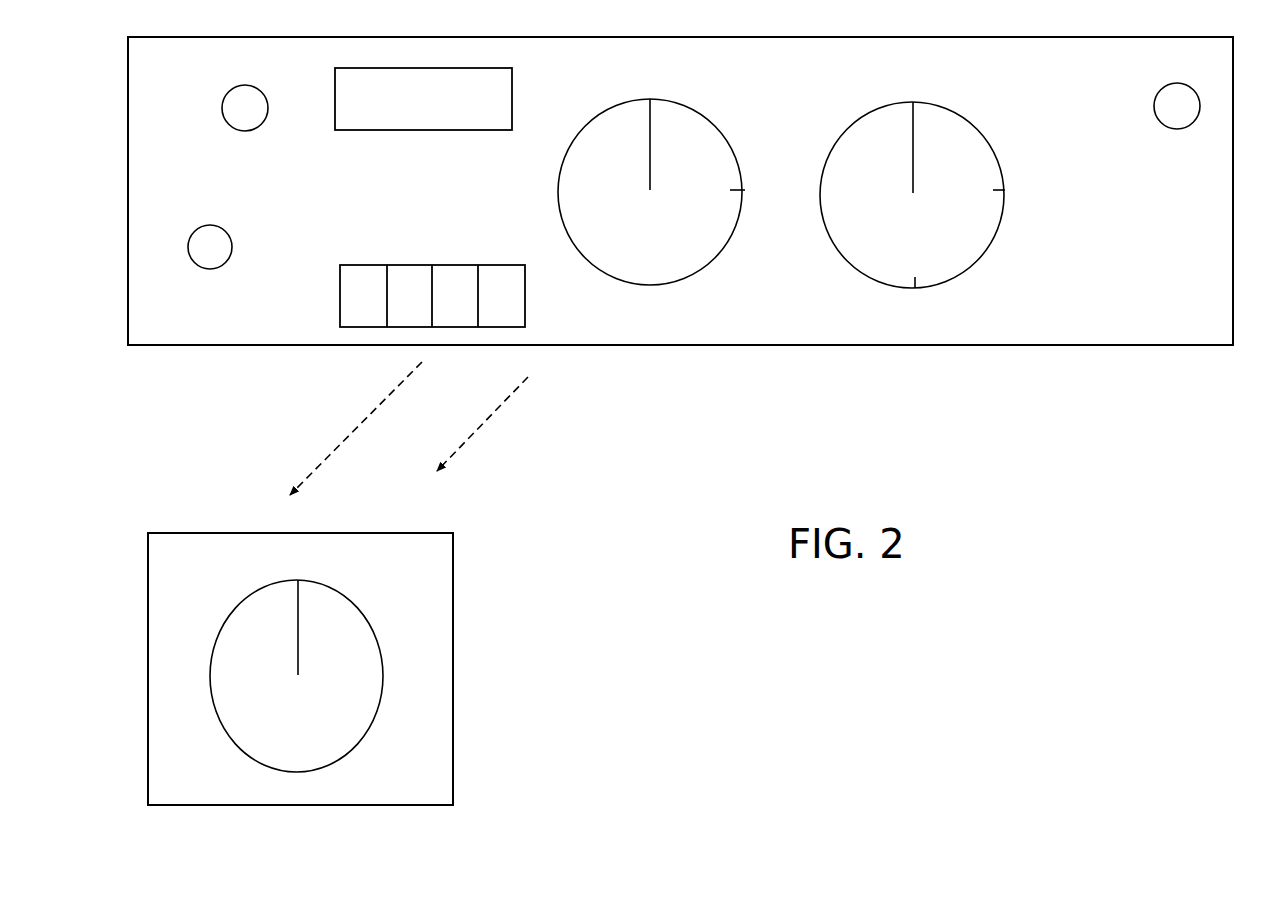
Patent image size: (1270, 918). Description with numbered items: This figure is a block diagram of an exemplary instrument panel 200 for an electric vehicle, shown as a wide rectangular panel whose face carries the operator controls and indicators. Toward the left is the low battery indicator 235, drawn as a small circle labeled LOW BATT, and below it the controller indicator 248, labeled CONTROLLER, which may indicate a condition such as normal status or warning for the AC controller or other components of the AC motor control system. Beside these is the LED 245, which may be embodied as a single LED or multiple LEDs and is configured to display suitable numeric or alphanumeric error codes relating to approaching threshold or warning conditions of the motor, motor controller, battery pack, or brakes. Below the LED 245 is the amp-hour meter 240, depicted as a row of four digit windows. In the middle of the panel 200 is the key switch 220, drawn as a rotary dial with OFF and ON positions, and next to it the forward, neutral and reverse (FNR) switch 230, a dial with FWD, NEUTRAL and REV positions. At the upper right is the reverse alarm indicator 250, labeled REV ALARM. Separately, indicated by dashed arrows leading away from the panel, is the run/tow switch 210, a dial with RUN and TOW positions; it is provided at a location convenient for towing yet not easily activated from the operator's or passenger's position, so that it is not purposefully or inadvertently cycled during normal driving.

The instrument panel 200 is at (957, 345).
The run/tow switch 210 is at (453, 593).
The key switch 220 is at (715, 260).
The forward, neutral and reverse (FNR) switch 230 is at (995, 238).
The low battery indicator 235 is at (266, 109).
The amp-hour meter 240 is at (442, 265).
The LED 245 is at (408, 130).
The controller indicator 248 is at (232, 252).
The reverse alarm indicator 250 is at (1154, 107).